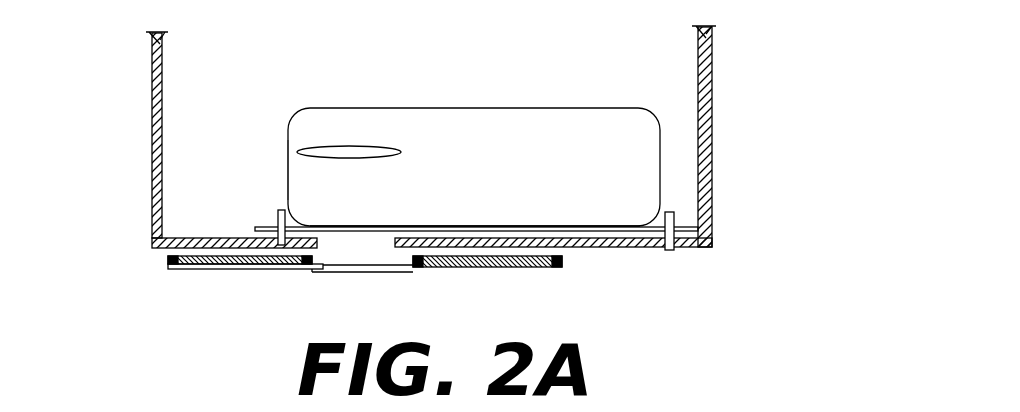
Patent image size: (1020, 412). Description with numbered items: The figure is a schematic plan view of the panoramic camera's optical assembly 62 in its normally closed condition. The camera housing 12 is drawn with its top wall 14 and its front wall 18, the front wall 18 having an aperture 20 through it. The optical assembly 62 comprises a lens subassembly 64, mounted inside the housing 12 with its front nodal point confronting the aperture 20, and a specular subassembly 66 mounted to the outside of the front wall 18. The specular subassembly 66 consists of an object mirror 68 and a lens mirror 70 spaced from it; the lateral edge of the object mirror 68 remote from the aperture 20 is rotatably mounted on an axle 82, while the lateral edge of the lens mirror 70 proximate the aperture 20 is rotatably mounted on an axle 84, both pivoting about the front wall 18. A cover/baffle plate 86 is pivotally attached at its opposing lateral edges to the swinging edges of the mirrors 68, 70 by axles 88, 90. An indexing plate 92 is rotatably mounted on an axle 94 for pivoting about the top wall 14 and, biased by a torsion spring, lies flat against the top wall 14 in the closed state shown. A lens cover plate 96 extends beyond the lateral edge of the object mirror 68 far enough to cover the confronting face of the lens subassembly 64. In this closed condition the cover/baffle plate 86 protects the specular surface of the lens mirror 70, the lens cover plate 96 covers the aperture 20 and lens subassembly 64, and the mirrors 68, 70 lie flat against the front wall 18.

The housing 12 is at (152, 113).
The top wall 14 is at (185, 57).
The front wall 18 is at (688, 250).
The aperture 20 is at (475, 210).
The optical assembly 62 is at (268, 157).
The lens subassembly 64 is at (352, 148).
The specular subassembly 66 is at (218, 285).
The object mirror 68 is at (512, 268).
The lens mirror 70 is at (270, 270).
The axle 82 is at (560, 268).
The axle 84 is at (305, 270).
The cover/baffle plate 86 is at (185, 270).
The axle 88 is at (170, 262).
The axle 90 is at (420, 268).
The indexing plate 92 is at (514, 125).
The axle 94 is at (660, 222).
The lens cover plate 96 is at (375, 273).